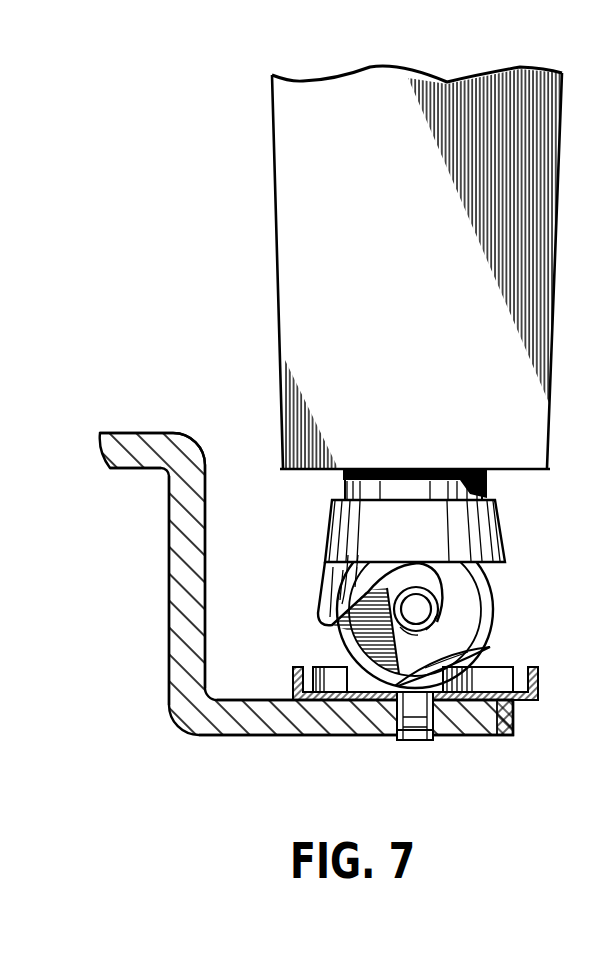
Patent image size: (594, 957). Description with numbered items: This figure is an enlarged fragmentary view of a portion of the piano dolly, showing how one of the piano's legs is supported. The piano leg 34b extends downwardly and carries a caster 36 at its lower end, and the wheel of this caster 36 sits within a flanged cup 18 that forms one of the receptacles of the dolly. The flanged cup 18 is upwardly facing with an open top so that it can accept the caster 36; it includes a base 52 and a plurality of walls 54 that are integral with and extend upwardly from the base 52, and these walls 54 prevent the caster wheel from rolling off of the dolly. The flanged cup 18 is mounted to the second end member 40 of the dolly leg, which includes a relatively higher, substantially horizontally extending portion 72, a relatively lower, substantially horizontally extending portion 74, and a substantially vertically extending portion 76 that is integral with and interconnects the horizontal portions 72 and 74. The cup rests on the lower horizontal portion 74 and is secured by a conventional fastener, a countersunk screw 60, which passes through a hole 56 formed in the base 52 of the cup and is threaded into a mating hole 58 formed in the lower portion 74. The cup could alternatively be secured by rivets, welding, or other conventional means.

The leg 34b is at (288, 210).
The caster 36 is at (499, 521).
The hole 56 is at (484, 643).
The walls 54 is at (330, 667).
The flanged cup 18 is at (543, 704).
The second end member 40 is at (300, 580).
The relatively higher, substantially horizontally extending portion 72 is at (161, 440).
The substantially vertically extending portion 76 is at (168, 596).
The relatively lower, substantially horizontally extending portion 74 is at (289, 736).
The mating hole 58 is at (408, 743).
The countersunk screw 60 is at (422, 743).
The base 52 is at (492, 736).